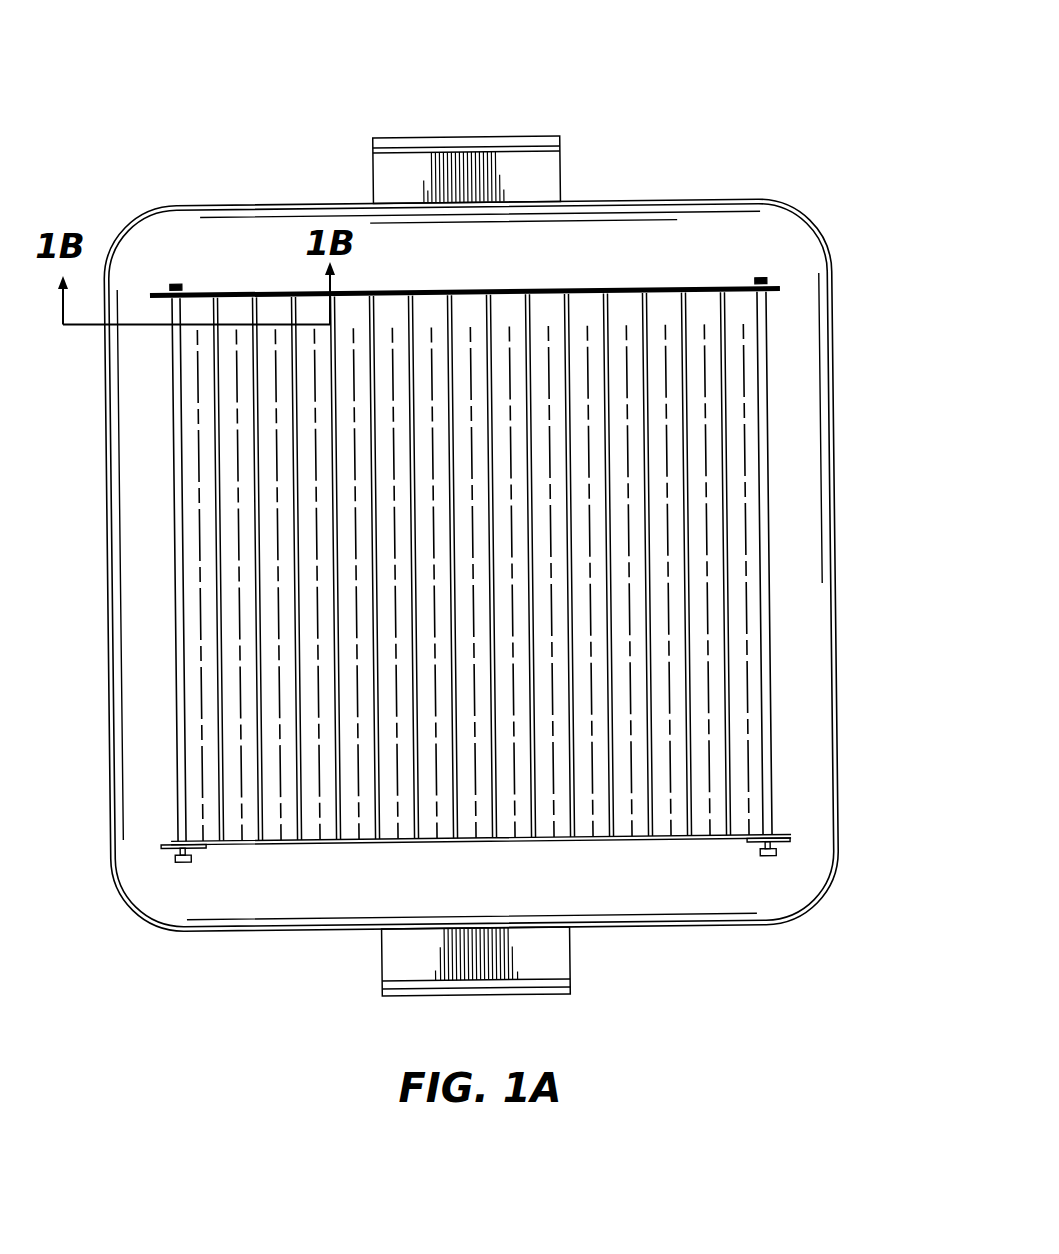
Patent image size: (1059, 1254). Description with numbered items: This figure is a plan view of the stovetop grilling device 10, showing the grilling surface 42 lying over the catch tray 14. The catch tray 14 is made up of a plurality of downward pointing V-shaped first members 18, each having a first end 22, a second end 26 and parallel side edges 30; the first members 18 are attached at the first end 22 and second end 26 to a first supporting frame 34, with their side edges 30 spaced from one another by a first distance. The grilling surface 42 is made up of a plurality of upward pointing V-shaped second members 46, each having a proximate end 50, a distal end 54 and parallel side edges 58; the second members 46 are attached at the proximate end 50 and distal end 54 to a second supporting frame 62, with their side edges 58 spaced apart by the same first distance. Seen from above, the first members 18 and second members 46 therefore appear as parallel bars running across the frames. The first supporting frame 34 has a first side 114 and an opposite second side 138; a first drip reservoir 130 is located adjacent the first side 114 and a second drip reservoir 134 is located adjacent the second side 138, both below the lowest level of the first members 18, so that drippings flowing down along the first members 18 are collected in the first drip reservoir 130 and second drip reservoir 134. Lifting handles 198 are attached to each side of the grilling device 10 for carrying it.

The stovetop grilling device 10 is at (847, 180).
The catch tray 14 is at (686, 305).
The first members 18 is at (648, 313).
The first end 22 is at (603, 312).
The second end 26 is at (613, 842).
The side edges 30 is at (603, 352).
The first supporting frame 34 is at (708, 293).
The grilling surface 42 is at (440, 315).
The second members 46 is at (368, 820).
The proximate end 50 is at (363, 323).
The distal end 54 is at (348, 845).
The side edges 58 is at (392, 312).
The second supporting frame 62 is at (228, 295).
The first side 114 is at (202, 290).
The first drip reservoir 130 is at (226, 218).
The second drip reservoir 134 is at (773, 902).
The second side 138 is at (240, 845).
The lifting handles 198 is at (375, 145).